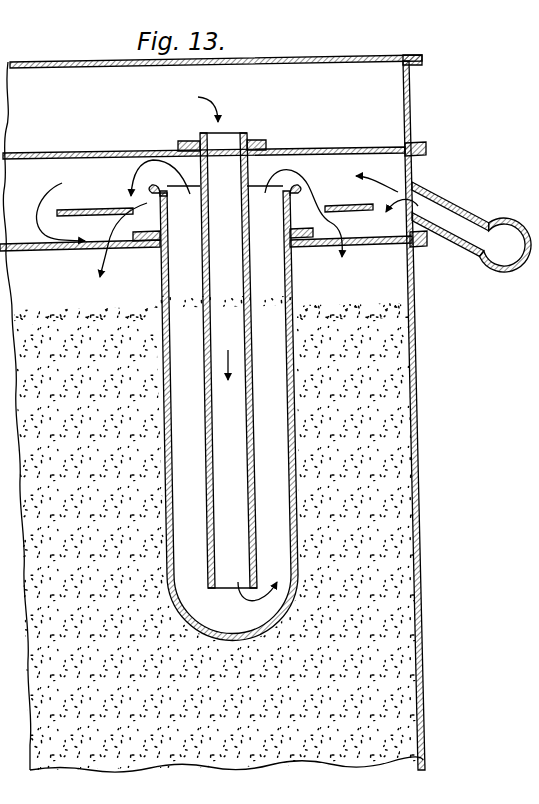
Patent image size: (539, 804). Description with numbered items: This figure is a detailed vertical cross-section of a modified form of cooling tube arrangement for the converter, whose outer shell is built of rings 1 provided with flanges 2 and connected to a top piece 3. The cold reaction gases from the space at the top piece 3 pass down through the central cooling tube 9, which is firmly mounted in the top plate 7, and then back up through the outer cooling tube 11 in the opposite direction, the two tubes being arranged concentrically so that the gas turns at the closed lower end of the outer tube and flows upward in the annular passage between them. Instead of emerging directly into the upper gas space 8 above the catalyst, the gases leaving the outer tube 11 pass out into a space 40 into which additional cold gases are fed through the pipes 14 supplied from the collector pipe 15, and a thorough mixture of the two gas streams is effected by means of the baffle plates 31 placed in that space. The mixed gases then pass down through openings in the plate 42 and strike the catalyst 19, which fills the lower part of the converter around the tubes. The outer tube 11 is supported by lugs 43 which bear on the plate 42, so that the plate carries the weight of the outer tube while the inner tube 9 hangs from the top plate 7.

The rings 1 is at (412, 108).
The flanges 2 is at (421, 144).
The top piece 3 is at (288, 63).
The top plate 7 is at (314, 150).
The upper gas space 8 is at (351, 260).
The central cooling tubes 9 is at (204, 303).
The outer cooling tubes 11 is at (291, 283).
The pipes 14 is at (451, 198).
The collector pipe 15 is at (502, 232).
The catalyst 19 is at (400, 438).
The baffle plates 31 is at (79, 209).
The space 40 is at (133, 178).
The plate 42 is at (54, 251).
The lugs 43 is at (133, 247).